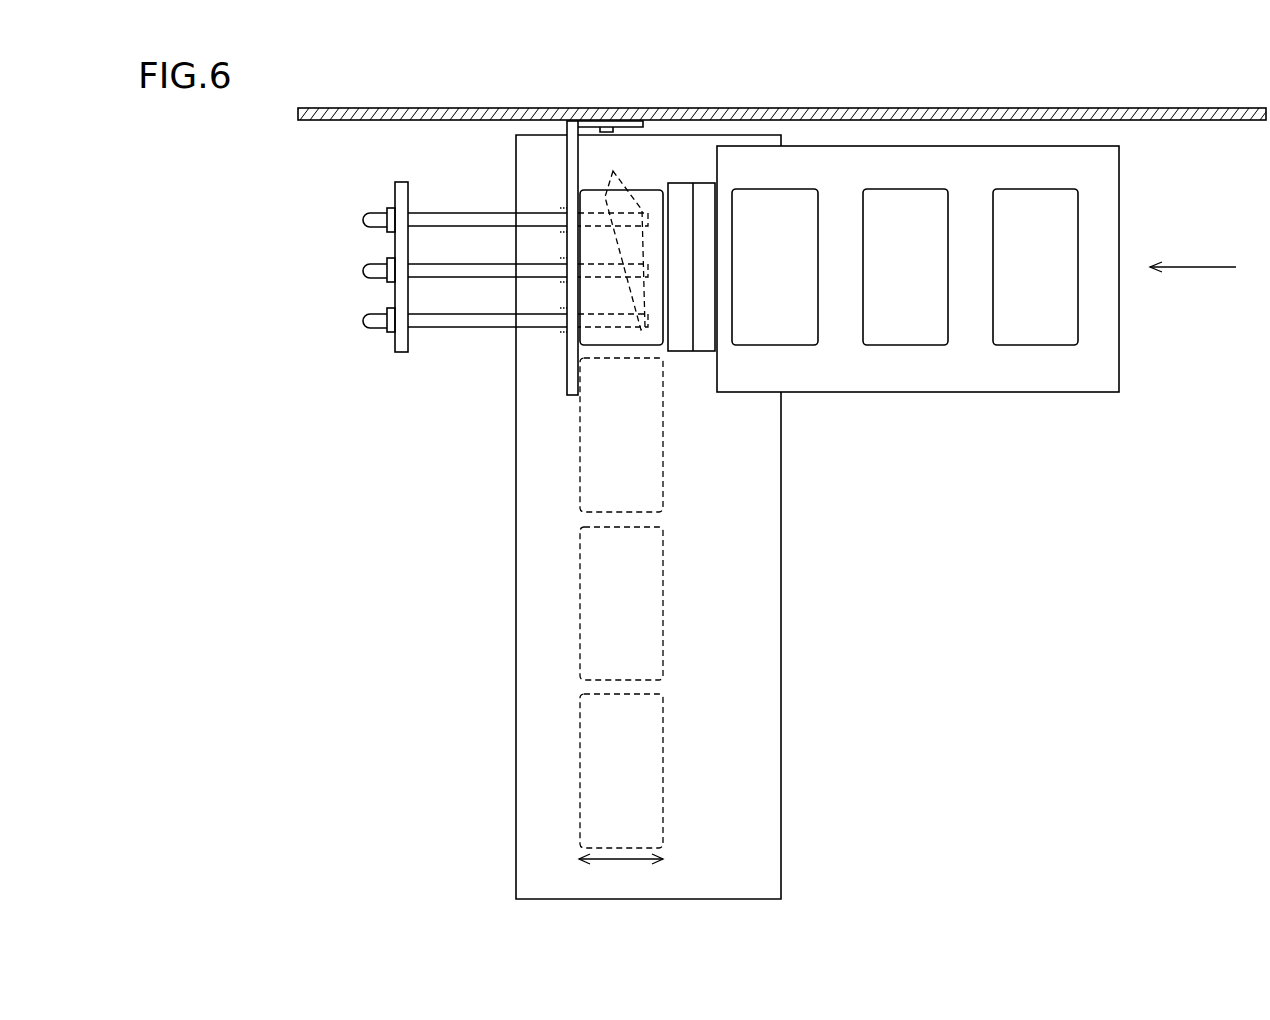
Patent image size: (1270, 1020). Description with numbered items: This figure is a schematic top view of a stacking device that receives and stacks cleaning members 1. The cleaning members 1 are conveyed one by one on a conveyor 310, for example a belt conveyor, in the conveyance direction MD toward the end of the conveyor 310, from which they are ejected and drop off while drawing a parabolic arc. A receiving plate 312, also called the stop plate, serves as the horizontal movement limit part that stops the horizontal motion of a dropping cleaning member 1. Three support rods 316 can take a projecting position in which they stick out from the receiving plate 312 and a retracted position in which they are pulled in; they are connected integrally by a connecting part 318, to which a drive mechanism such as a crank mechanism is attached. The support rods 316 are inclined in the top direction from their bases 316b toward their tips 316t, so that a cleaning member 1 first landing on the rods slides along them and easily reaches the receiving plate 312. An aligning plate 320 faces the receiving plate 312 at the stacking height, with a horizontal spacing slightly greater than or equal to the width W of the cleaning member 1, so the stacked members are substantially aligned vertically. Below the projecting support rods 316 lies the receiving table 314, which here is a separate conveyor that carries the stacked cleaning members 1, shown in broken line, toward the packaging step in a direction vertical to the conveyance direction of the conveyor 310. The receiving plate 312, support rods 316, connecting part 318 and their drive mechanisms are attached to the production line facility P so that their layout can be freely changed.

The cleaning member 1 is at (640, 198).
The conveyor 310 is at (1066, 375).
The receiving plate 312 is at (567, 152).
The receiving table 314 is at (745, 705).
The support rods 316 is at (443, 220).
The bases 316b is at (372, 320).
The tips 316t is at (617, 238).
The connecting part 318 is at (402, 181).
The aligning plate 320 is at (700, 345).
The production line facility P is at (712, 108).
The conveyance direction MD is at (1193, 283).
The width W is at (621, 873).